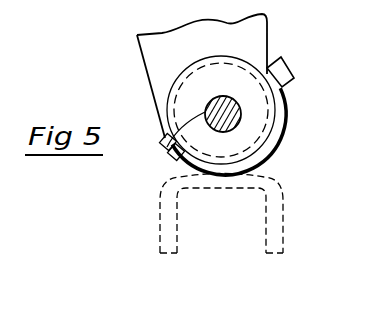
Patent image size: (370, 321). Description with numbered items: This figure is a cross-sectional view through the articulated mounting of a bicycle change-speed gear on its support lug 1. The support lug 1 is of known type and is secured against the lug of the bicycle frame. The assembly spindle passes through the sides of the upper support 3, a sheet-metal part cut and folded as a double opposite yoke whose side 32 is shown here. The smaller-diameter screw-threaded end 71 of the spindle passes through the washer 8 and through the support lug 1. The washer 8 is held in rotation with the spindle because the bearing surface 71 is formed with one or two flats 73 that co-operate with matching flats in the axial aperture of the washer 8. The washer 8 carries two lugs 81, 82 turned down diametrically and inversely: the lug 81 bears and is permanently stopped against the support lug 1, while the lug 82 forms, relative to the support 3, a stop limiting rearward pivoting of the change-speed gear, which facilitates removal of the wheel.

The support lug 1 is at (153, 50).
The washer 8 is at (190, 97).
The screw-threaded end of the spindle 71 is at (205, 112).
The flats 73 is at (162, 143).
The lug of the washer 81 is at (292, 80).
The lug of the washer 82 is at (171, 152).
The upper support 3 is at (225, 204).
The side of the yoke 32 is at (270, 228).